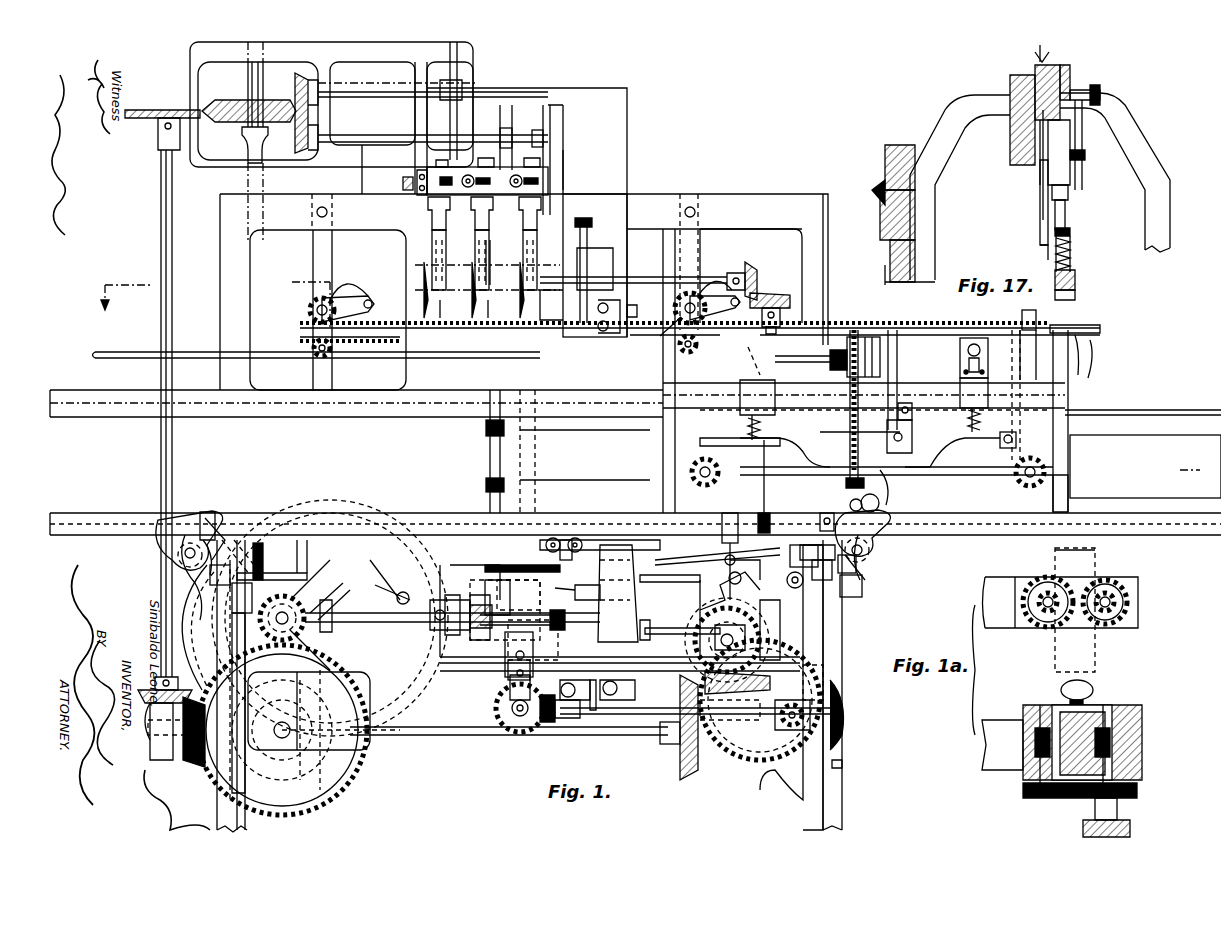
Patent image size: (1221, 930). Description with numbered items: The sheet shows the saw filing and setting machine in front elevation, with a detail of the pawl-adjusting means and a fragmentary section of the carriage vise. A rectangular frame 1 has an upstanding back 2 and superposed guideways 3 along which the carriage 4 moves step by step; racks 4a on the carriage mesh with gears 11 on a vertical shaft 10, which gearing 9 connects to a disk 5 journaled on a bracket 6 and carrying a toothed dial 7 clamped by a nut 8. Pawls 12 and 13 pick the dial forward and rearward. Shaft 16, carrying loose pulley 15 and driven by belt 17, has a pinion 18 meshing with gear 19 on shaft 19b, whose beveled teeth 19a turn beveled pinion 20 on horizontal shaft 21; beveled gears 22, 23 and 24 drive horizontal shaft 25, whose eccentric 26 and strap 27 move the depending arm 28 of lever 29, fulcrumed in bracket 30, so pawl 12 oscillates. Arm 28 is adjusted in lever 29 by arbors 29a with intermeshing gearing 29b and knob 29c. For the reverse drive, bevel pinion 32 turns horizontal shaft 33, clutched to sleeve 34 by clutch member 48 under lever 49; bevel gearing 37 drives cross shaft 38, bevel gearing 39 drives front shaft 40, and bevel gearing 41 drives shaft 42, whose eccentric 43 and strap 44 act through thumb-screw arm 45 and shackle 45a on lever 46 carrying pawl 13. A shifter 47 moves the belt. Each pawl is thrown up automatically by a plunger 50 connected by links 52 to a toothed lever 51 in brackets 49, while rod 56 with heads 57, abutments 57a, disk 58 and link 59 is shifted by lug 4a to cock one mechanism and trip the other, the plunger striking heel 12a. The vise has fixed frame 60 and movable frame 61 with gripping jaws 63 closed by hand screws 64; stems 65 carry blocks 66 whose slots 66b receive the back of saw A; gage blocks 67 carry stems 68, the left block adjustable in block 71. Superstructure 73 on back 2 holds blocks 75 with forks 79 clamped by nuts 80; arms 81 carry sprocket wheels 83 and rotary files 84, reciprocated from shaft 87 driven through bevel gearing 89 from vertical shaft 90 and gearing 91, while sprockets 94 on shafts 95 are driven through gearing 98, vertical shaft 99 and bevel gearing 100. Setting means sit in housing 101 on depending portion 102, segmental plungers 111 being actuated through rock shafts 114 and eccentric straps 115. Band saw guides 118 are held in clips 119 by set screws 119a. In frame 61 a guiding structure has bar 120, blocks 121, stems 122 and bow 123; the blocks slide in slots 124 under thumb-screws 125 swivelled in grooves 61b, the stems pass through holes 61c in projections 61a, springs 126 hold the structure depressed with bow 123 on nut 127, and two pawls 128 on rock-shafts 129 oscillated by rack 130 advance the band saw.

In FIG. 1, the rectangular frame 1 is at (842, 650).
In FIG. 1, the upstanding back 2 is at (668, 182).
In FIG. 1, the guideways 3 is at (410, 420).
In FIG. 17, the guideways 3 is at (891, 198).
In FIG. 1, the carriage 4 is at (1100, 425).
In FIG. 17, the carriage 4 is at (890, 278).
In FIG. 1, the racks 4a is at (835, 523).
In FIG. 1, the disk 5 is at (656, 414).
In FIG. 1, the bracket 6 is at (565, 600).
In FIG. 1, the removable dial 7 is at (480, 568).
In FIG. 1, the nut 8 is at (435, 153).
In FIG. 1, the gearing 9 is at (507, 426).
In FIG. 1, the vertical shaft 10 is at (585, 451).
In FIG. 1, the gears 11 is at (481, 451).
In FIG. 1, the pawl 12 is at (520, 575).
In FIG. 1, the heel 12a is at (560, 540).
In FIG. 1, the pawl 13 is at (560, 540).
In FIG. 1, the loose pulley 15 is at (376, 700).
In FIG. 1, the shaft 16 is at (270, 620).
In FIG. 1, the belt 17 is at (865, 390).
In FIG. 1, the pinion 18 is at (282, 578).
In FIG. 1, the gear 19 is at (366, 760).
In FIG. 1, the beveled teeth 19a is at (320, 788).
In FIG. 1, the shaft 19b is at (285, 770).
In FIG. 1, the beveled pinion 20 is at (341, 765).
In FIG. 1A, the beveled pinion 20 is at (1062, 744).
In FIG. 1, the horizontal shaft 21 is at (445, 738).
In FIG. 1, the beveled gear 22 is at (688, 780).
In FIG. 1, the beveled gear 23 is at (700, 688).
In FIG. 1, the beveled gear 24 is at (708, 630).
In FIG. 1, the horizontal shaft 25 is at (715, 650).
In FIG. 1, the eccentric 26 is at (718, 591).
In FIG. 1, the eccentric strap 27 is at (755, 595).
In FIG. 1, the depending arm 28 is at (717, 561).
In FIG. 1A, the depending arm 28 is at (1055, 652).
In FIG. 1, the lever 29 is at (670, 589).
In FIG. 1A, the lever 29 is at (1128, 628).
In FIG. 1A, the arbors 29a is at (1068, 692).
In FIG. 1A, the intermeshing gearing 29b is at (1062, 628).
In FIG. 1A, the knob 29c is at (1115, 610).
In FIG. 1, the bracket 30 is at (645, 580).
In FIG. 1, the bevel pinion 32 is at (330, 599).
In FIG. 1, the horizontal shaft 33 is at (452, 613).
In FIG. 1, the clutch sleeve 34 is at (480, 640).
In FIG. 1, the bevel gearing 37 is at (508, 690).
In FIG. 1, the cross shaft 38 is at (510, 730).
In FIG. 1, the bevel gearing 39 is at (542, 725).
In FIG. 1, the shaft 40 is at (582, 715).
In FIG. 1, the bevel gearing 41 is at (752, 735).
In FIG. 1, the shaft 42 is at (842, 720).
In FIG. 1, the eccentric 43 is at (842, 673).
In FIG. 1, the eccentric strap 44 is at (838, 632).
In FIG. 1, the arm 45 is at (804, 565).
In FIG. 1, the shackle 45a is at (862, 580).
In FIG. 1, the lever 46 is at (743, 513).
In FIG. 1, the shifter 47 is at (405, 590).
In FIG. 1, the clutch member 48 is at (442, 635).
In FIG. 1, the brackets 49 is at (210, 572).
In FIG. 1, the plunger 50 is at (577, 588).
In FIG. 1, the toothed lever 51 is at (185, 580).
In FIG. 1, the links 52 is at (717, 558).
In FIG. 1, the rod 56 is at (660, 513).
In FIG. 1, the head 57 is at (190, 511).
In FIG. 1, the abutment 57a is at (235, 500).
In FIG. 1, the disk 58 is at (185, 568).
In FIG. 1, the link 59 is at (242, 557).
In FIG. 1, the fixed frame 60 is at (1068, 490).
In FIG. 17, the fixed frame 60 is at (935, 262).
In FIG. 1, the movable frame 61 is at (1068, 468).
In FIG. 17, the movable frame 61 is at (1150, 235).
In FIG. 1, the depending projections 61a is at (958, 398).
In FIG. 17, the depending projections 61a is at (1070, 232).
In FIG. 17, the grooves 61b is at (1093, 161).
In FIG. 17, the holes 61c is at (1075, 238).
In FIG. 17, the gripping jaw 63 is at (1038, 52).
In FIG. 1, the hand screws 64 is at (870, 465).
In FIG. 1, the stems 65 is at (958, 358).
In FIG. 1, the saw supporting blocks 66 is at (958, 426).
In FIG. 17, the saw supporting blocks 66 is at (1040, 232).
In FIG. 17, the slot 66b is at (1042, 212).
In FIG. 1, the blocks 67 is at (880, 348).
In FIG. 1, the stems 68 is at (1038, 324).
In FIG. 1, the block 71 is at (845, 364).
In FIG. 1, the superstructure 73 is at (627, 105).
In FIG. 1, the blocks 75 is at (420, 170).
In FIG. 1, the fork 79 is at (427, 208).
In FIG. 1, the nut 80 is at (478, 166).
In FIG. 1, the depending arm 81 is at (488, 250).
In FIG. 1, the sprocket wheel 83 is at (497, 317).
In FIG. 1, the rotary file 84 is at (454, 317).
In FIG. 1, the horizontal shaft 87 is at (716, 282).
In FIG. 1, the bevel gearing 89 is at (762, 290).
In FIG. 1, the vertical shaft 90 is at (778, 486).
In FIG. 1, the gearing 91 is at (250, 104).
In FIG. 1, the sprockets 94 is at (535, 112).
In FIG. 1, the horizontal shafts 95 is at (352, 105).
In FIG. 1, the gearing 98 is at (160, 112).
In FIG. 1, the vertical shaft 99 is at (173, 333).
In FIG. 1, the bevel gearing 100 is at (215, 652).
In FIG. 1, the housing 101 is at (570, 337).
In FIG. 1, the depending portion 102 is at (627, 240).
In FIG. 1, the segmental plungers 111 is at (590, 262).
In FIG. 1, the rock shafts 114 is at (597, 693).
In FIG. 1, the eccentric straps 115 is at (662, 628).
In FIG. 1, the guides 118 is at (842, 688).
In FIG. 1, the clips 119 is at (832, 612).
In FIG. 1, the set screw 119a is at (232, 600).
In FIG. 17, the bar 120 is at (1060, 80).
In FIG. 17, the blocks 121 is at (1065, 135).
In FIG. 1, the stems 122 is at (752, 440).
In FIG. 17, the stems 122 is at (1068, 205).
In FIG. 1, the bow 123 is at (940, 468).
In FIG. 17, the bow 123 is at (1077, 296).
In FIG. 17, the slots 124 is at (1070, 190).
In FIG. 17, the thumb-screws 125 is at (1100, 95).
In FIG. 1, the springs 126 is at (1000, 436).
In FIG. 17, the springs 126 is at (1072, 262).
In FIG. 1, the nut 127 is at (858, 475).
In FIG. 1, the pawls 128 is at (360, 300).
In FIG. 1, the rock-shafts 129 is at (488, 349).
In FIG. 1, the horizontal rack 130 is at (440, 338).
In FIG. 1, the saw A is at (960, 325).
In FIG. 17, the saw A is at (1042, 178).